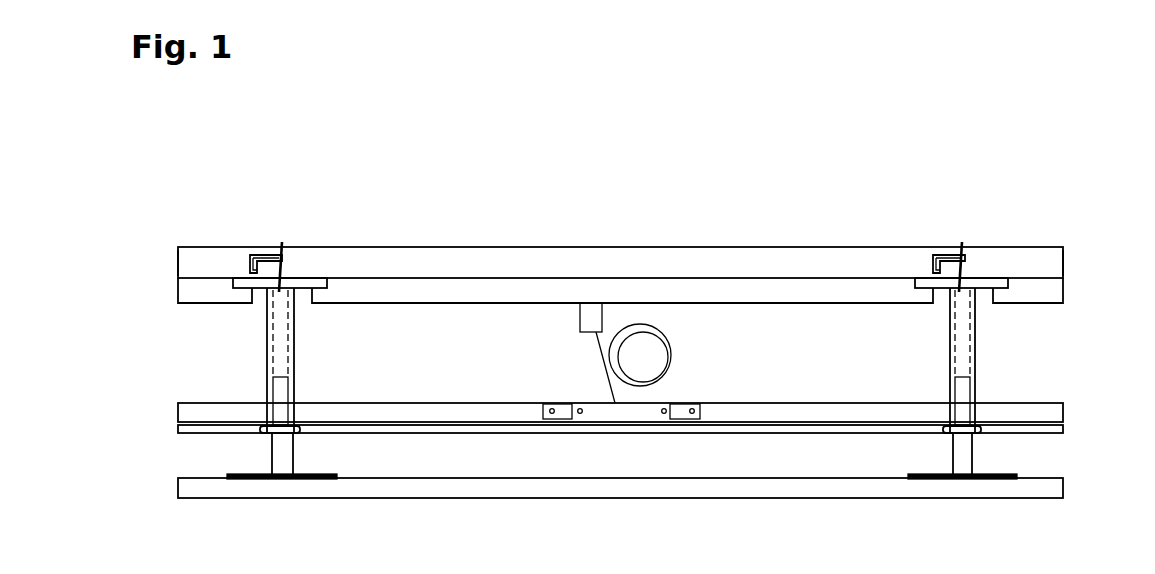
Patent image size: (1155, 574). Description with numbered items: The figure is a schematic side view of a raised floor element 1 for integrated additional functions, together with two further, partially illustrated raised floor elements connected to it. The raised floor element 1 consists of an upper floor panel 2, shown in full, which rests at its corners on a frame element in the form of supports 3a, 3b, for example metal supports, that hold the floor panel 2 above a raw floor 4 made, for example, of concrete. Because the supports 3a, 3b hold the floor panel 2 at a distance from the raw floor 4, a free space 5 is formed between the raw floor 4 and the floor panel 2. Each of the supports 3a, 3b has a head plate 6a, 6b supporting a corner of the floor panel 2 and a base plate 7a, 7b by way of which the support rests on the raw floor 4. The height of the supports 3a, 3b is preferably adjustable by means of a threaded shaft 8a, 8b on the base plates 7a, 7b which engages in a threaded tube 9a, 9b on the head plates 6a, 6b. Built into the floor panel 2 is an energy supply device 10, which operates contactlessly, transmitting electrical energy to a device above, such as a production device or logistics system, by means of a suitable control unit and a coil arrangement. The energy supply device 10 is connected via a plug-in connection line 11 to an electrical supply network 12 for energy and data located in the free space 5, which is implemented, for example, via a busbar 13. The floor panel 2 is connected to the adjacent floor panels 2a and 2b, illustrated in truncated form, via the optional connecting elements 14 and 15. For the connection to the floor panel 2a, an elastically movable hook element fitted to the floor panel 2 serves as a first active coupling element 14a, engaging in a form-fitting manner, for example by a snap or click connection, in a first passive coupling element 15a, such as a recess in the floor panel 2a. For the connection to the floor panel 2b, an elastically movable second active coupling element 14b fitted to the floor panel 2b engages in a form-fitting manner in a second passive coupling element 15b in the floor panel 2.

The raised floor element 1 is at (786, 152).
The floor panel 2 is at (713, 258).
The floor panel 2a is at (192, 258).
The floor panel 2b is at (1048, 258).
The support 3a is at (236, 382).
The support 3b is at (1008, 382).
The raw floor 4 is at (845, 490).
The free space 5 is at (785, 356).
The head plate 6a is at (266, 300).
The head plate 6b is at (975, 300).
The base plate 7a is at (245, 476).
The base plate 7b is at (1000, 476).
The threaded shaft 8a is at (268, 450).
The threaded shaft 8b is at (977, 450).
The threaded tube 9a is at (271, 360).
The threaded tube 9b is at (973, 360).
The energy supply device 10 is at (845, 293).
The plug-in connection line 11 is at (672, 347).
The electrical supply network 12 is at (520, 396).
The busbar 13 is at (392, 401).
The connecting element 14 is at (301, 224).
The active coupling element 14a is at (280, 245).
The active coupling element 14b is at (960, 245).
The connecting element 15 is at (987, 224).
The passive coupling element 15a is at (251, 255).
The passive coupling element 15b is at (935, 255).